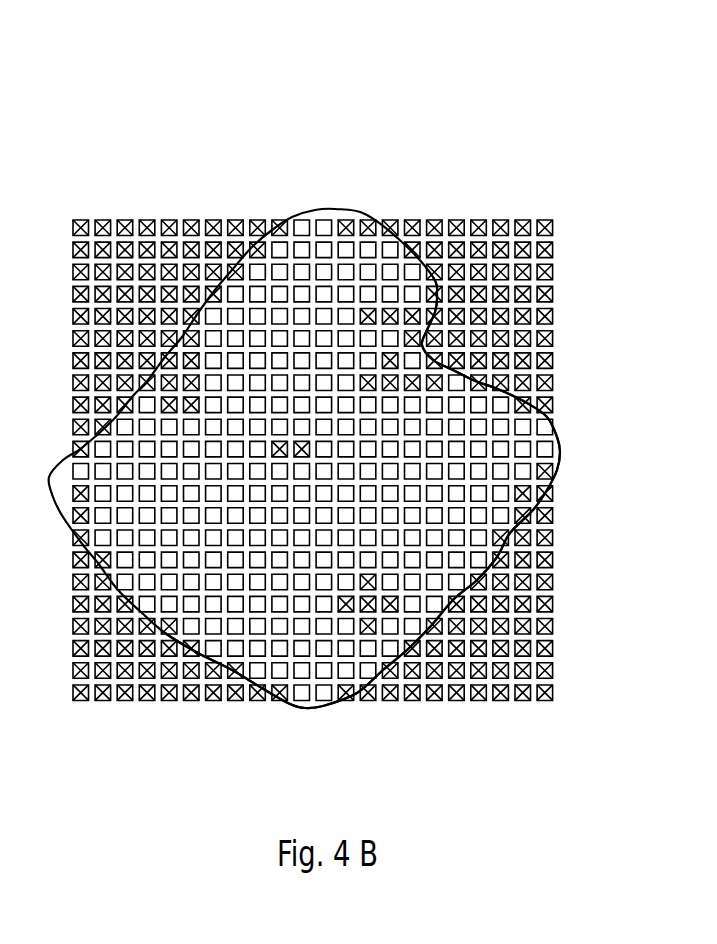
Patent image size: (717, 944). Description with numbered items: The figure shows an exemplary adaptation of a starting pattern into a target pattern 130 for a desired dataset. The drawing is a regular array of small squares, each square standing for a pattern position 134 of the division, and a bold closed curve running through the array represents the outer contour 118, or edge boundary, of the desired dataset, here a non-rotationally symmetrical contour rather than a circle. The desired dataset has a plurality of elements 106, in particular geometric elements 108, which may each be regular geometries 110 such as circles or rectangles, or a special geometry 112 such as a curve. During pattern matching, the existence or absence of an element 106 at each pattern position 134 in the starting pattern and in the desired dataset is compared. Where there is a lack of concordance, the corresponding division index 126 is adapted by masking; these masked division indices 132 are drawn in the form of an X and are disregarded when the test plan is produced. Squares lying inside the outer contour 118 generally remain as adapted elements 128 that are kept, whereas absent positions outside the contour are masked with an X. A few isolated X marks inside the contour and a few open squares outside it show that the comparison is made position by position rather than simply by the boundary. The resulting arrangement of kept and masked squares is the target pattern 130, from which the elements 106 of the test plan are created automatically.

The target pattern 130 is at (534, 188).
The element 106 is at (376, 497).
The geometric element 108 is at (376, 497).
The regular geometry 110 is at (376, 497).
The special geometry 112 is at (369, 459).
The outer contour 118 is at (560, 437).
The division index 126 is at (332, 706).
The adapted element 128 is at (562, 441).
The masked division index 132 is at (562, 441).
The pattern position 134 is at (513, 537).